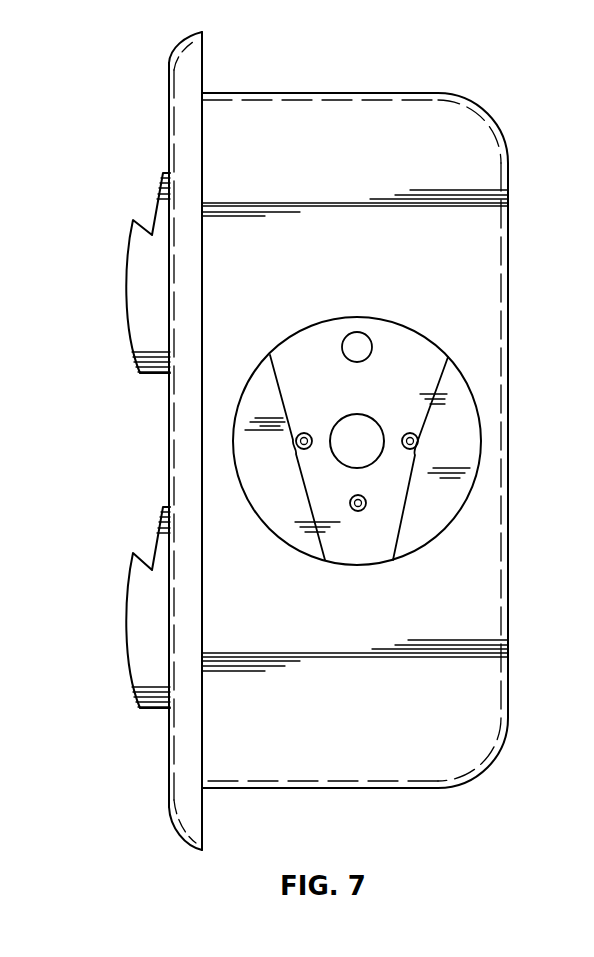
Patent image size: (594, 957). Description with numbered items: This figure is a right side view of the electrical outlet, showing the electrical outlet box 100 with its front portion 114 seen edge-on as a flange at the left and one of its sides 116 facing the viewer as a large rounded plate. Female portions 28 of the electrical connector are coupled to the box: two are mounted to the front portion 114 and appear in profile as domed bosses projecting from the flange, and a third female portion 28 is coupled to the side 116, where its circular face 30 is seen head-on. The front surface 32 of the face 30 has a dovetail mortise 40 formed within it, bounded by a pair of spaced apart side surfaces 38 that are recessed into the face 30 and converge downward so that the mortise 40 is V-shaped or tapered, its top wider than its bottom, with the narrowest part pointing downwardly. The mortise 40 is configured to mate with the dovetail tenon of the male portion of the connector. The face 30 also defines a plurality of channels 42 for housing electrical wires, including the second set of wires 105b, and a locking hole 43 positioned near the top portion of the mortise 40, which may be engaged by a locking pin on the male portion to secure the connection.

The electrical outlet box 100 is at (493, 128).
The female portion 28 is at (127, 233).
The dovetail mortise 40 is at (417, 348).
The locking hole 43 is at (357, 343).
The channels 42 is at (407, 436).
The second set of wires 105b is at (425, 440).
The face 30 is at (468, 467).
The front surface 32 is at (414, 528).
The side surfaces 38 is at (413, 488).
The sides 116 is at (470, 750).
The front portion 114 is at (170, 804).